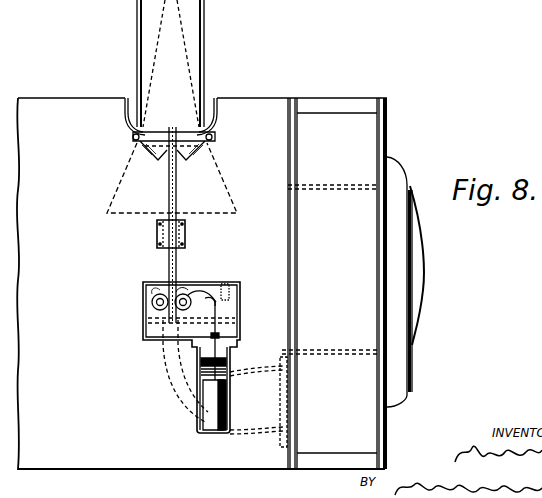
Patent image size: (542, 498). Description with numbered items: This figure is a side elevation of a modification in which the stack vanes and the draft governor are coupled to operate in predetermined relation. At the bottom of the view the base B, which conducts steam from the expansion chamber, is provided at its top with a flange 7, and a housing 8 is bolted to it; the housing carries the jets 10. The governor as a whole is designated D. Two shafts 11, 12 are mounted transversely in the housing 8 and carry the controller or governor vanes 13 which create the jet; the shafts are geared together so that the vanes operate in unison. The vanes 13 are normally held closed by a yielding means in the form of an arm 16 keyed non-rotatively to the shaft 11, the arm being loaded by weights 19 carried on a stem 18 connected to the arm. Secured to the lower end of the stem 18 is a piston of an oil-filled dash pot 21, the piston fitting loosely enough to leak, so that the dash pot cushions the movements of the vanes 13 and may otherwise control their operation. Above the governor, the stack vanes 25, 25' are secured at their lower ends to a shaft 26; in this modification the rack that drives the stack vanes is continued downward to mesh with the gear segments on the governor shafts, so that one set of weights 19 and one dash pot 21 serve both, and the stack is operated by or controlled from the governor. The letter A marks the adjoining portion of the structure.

The flange 7 is at (143, 315).
The housing 8 is at (151, 303).
The jets 10 is at (170, 63).
The shaft 11 is at (153, 296).
The shaft 12 is at (192, 303).
The governor vanes 13 is at (184, 291).
The arm 16 is at (211, 289).
The stem 18 is at (218, 327).
The weights 19 is at (204, 366).
The dash pot 21 is at (215, 412).
The spring 25 is at (135, 63).
The stack vanes 25' is at (211, 63).
The shaft 26 is at (133, 140).
The lever A is at (335, 382).
The base B is at (223, 375).
The governor D is at (168, 280).